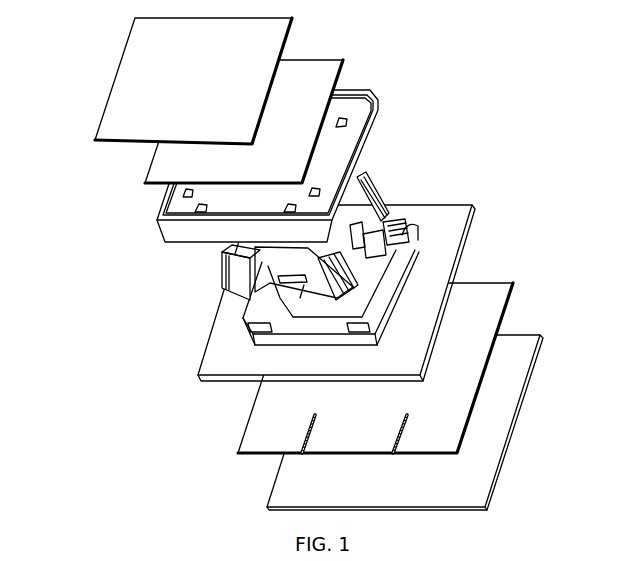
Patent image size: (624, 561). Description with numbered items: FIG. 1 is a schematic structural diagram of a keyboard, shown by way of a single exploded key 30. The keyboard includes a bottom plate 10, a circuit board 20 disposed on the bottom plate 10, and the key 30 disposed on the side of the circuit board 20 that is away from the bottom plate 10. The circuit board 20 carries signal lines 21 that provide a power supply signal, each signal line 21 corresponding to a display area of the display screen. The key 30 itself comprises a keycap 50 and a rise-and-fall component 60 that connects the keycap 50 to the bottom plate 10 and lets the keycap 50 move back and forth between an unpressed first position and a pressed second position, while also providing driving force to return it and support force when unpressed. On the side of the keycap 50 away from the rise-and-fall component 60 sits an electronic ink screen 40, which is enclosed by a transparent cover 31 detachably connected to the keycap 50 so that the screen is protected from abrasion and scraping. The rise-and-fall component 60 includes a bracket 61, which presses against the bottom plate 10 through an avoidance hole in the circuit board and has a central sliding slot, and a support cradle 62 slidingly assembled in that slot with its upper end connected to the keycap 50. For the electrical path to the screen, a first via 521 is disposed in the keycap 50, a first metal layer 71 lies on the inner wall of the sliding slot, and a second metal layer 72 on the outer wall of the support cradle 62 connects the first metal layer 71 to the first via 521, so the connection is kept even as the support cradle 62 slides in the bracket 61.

The bottom plate 10 is at (520, 353).
The circuit board 20 is at (413, 392).
The signal line 21 is at (395, 455).
The key 30 is at (242, 130).
The transparent cover 31 is at (275, 30).
The electronic ink screen 40 is at (338, 65).
The keycap 50 is at (301, 166).
The first via 521 is at (343, 122).
The rise-and-fall component 60 is at (375, 276).
The bracket 61 is at (465, 227).
The support cradle 62 is at (375, 185).
The first metal layer 71 is at (413, 232).
The second metal layer 72 is at (240, 275).